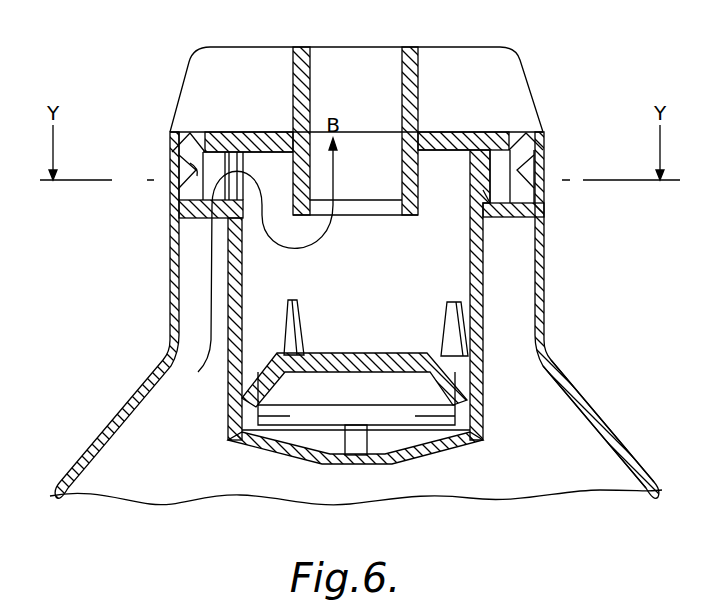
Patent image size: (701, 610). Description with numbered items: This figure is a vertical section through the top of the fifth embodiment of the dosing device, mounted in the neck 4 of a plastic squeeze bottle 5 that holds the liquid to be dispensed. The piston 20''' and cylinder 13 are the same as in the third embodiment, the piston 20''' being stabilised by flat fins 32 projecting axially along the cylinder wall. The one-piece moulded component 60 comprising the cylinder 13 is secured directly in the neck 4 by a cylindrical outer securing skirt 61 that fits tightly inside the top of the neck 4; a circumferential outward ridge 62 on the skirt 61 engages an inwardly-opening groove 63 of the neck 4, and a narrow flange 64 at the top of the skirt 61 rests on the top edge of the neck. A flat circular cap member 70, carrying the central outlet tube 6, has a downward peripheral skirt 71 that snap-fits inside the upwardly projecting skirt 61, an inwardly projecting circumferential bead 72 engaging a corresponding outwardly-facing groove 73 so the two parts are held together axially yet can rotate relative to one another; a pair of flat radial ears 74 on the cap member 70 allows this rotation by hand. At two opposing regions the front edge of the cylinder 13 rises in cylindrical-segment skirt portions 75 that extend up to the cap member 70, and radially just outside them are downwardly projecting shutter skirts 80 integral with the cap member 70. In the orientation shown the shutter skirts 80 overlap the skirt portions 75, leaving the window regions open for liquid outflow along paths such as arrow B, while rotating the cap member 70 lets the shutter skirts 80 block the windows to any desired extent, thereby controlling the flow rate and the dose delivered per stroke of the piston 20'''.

The neck 4 is at (540, 246).
The squeeze bottle 5 is at (603, 417).
The outlet tube 6 is at (413, 73).
The cylinder 13 is at (230, 370).
The piston 20''' is at (366, 429).
The fins 32 is at (460, 338).
The one-piece moulded component 60 is at (485, 252).
The outer securing skirt 61 is at (530, 163).
The outward ridge 62 is at (190, 190).
The inwardly-opening groove 63 is at (197, 170).
The flange 64 is at (527, 140).
The cap member 70 is at (441, 140).
The peripheral skirt 71 is at (518, 203).
The bead 72 is at (173, 153).
The groove 73 is at (199, 153).
The ears 74 is at (523, 83).
The skirt portions 75 is at (247, 148).
The shutter skirts 80 is at (230, 157).